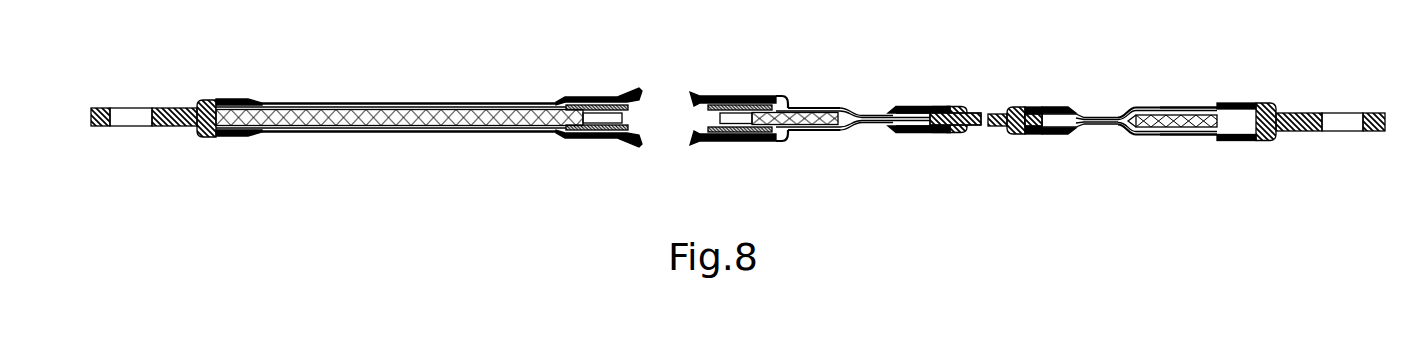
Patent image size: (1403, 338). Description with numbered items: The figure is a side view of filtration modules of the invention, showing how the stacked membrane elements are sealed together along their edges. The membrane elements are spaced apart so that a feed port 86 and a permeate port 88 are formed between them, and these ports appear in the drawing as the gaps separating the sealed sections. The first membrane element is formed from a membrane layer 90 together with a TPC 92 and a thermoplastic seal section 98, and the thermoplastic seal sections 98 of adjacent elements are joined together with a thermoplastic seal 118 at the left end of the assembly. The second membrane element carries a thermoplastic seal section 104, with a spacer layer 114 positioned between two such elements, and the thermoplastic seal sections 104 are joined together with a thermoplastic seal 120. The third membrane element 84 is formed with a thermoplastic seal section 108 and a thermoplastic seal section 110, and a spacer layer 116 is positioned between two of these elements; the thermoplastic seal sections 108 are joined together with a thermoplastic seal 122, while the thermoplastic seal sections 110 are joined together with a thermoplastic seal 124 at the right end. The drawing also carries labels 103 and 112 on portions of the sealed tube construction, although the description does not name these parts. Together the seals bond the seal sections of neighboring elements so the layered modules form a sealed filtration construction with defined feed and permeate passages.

The membrane element 84 is at (1127, 108).
The feed port 86 is at (666, 110).
The permeate port 88 is at (983, 127).
The membrane layer 90 is at (435, 103).
The TPC 92 is at (638, 88).
The thermoplastic seal section 98 is at (217, 98).
The tube 103 is at (732, 97).
The thermoplastic seal section 104 is at (933, 108).
The thermoplastic seal section 108 is at (1042, 103).
The thermoplastic seal section 110 is at (1253, 108).
The end portion 112 is at (526, 103).
The spacer layer 114 is at (802, 113).
The spacer layer 116 is at (1187, 108).
The thermoplastic seal 118 is at (170, 107).
The thermoplastic seal 120 is at (968, 108).
The thermoplastic seal 122 is at (1003, 110).
The thermoplastic seal 124 is at (1295, 112).